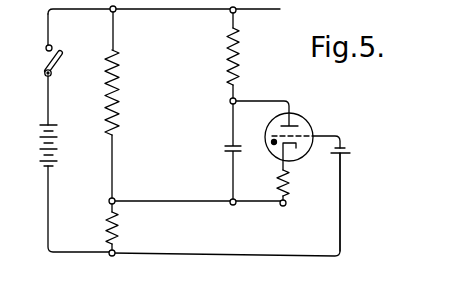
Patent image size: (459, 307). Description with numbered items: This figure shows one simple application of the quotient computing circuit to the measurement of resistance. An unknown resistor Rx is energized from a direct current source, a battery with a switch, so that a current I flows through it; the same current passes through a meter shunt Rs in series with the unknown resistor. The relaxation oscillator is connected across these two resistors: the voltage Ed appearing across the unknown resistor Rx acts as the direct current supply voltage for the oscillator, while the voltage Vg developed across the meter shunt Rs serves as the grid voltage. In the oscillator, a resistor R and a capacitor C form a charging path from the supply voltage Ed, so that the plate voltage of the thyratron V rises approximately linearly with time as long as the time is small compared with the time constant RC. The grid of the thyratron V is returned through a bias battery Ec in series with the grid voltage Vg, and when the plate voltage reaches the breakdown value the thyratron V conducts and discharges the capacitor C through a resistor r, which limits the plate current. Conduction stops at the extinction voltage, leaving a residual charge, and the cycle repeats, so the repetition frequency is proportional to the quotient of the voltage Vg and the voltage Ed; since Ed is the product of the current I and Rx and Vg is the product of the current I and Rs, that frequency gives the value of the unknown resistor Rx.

The current I is at (90, 44).
The unknown resistor Rx is at (115, 104).
The direct current supply voltage Ed is at (167, 13).
The grid voltage Vg is at (172, 205).
The meter shunt Rs is at (106, 231).
The resistor R is at (238, 63).
The capacitor C is at (222, 151).
The thyratron V is at (288, 132).
The resistor r is at (292, 186).
The bias battery Ec is at (356, 138).